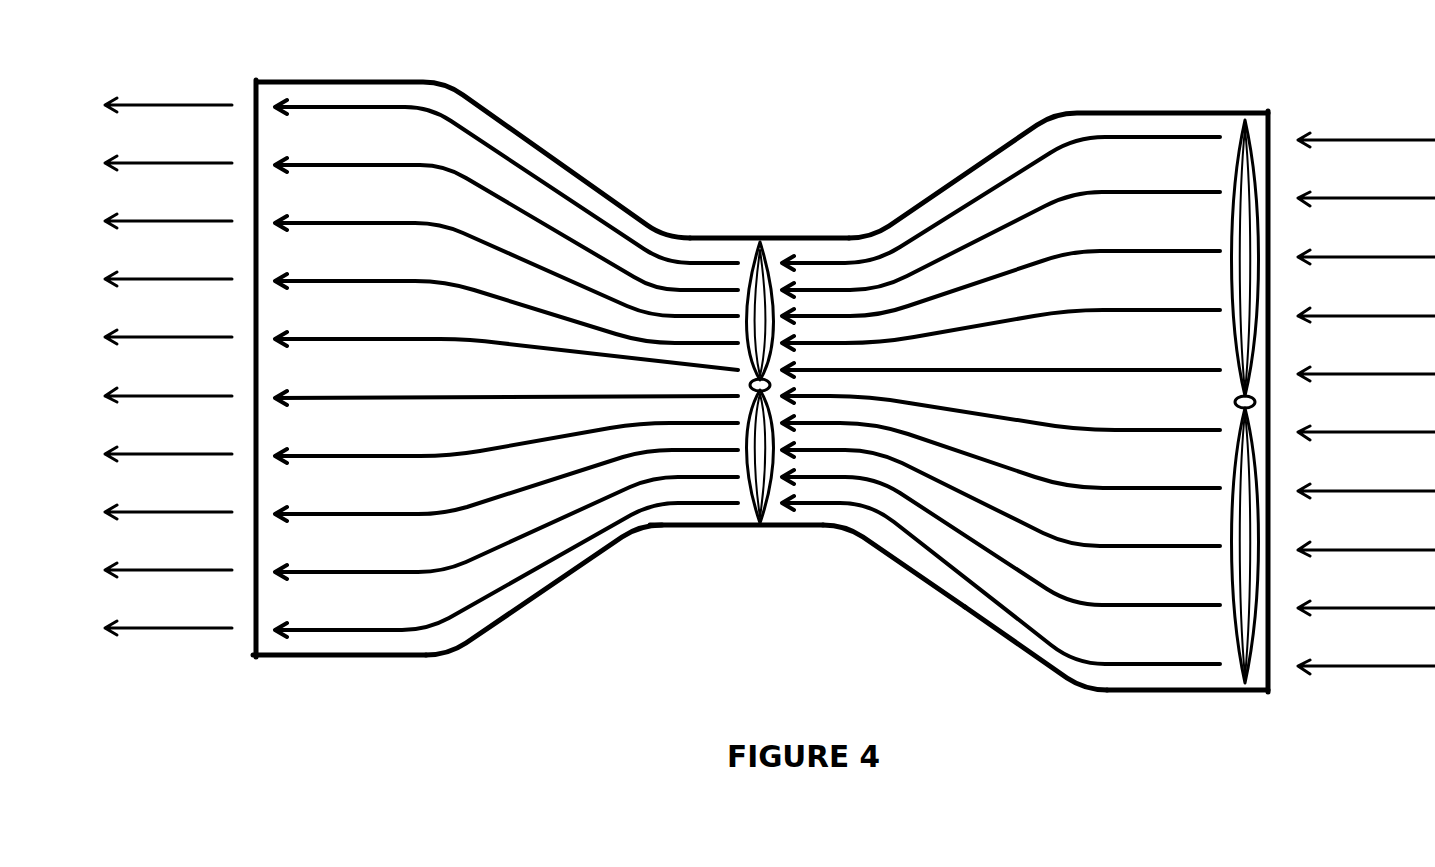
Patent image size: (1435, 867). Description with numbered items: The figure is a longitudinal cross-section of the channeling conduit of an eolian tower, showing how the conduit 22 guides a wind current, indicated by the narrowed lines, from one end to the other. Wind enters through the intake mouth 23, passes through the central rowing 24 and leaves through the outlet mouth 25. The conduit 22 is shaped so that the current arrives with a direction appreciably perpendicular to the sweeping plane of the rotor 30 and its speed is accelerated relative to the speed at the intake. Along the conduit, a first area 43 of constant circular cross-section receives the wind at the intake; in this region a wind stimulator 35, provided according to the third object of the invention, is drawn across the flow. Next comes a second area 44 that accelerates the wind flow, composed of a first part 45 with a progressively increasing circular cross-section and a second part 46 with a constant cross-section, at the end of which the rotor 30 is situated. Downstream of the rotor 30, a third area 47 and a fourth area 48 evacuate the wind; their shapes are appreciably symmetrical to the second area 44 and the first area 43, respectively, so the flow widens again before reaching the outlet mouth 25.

The conduit 22 is at (318, 79).
The intake mouth 23 is at (1272, 168).
The central rowing 24 is at (832, 236).
The outlet mouth 25 is at (250, 132).
The rotor 30 is at (760, 238).
The wind stimulator 35 is at (1241, 112).
The first area 43 is at (1185, 694).
The second area 44 is at (928, 582).
The first part 45 is at (966, 620).
The second part 46 is at (810, 530).
The third area 47 is at (580, 558).
The fourth area 48 is at (365, 659).